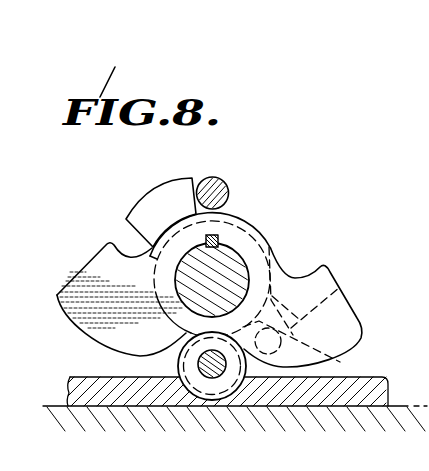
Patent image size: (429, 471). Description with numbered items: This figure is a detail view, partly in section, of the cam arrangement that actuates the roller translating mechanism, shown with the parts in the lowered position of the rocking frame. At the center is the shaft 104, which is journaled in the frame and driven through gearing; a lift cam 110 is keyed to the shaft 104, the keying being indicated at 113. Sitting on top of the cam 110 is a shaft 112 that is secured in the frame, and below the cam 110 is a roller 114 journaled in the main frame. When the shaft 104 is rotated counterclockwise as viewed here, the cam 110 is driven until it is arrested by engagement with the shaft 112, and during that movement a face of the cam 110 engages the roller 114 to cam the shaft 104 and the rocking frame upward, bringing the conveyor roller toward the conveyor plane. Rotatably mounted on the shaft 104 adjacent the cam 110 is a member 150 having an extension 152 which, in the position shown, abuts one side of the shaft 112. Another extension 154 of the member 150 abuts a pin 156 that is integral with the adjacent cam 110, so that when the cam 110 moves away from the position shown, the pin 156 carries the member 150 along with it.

The shaft 104 is at (233, 267).
The lift cam 110 is at (353, 328).
The shaft 112 is at (226, 183).
The key 113 is at (218, 238).
The roller 114 is at (213, 380).
The member 150 is at (113, 205).
The extension 152 is at (158, 196).
The extension 154 is at (341, 287).
The pin 156 is at (313, 358).